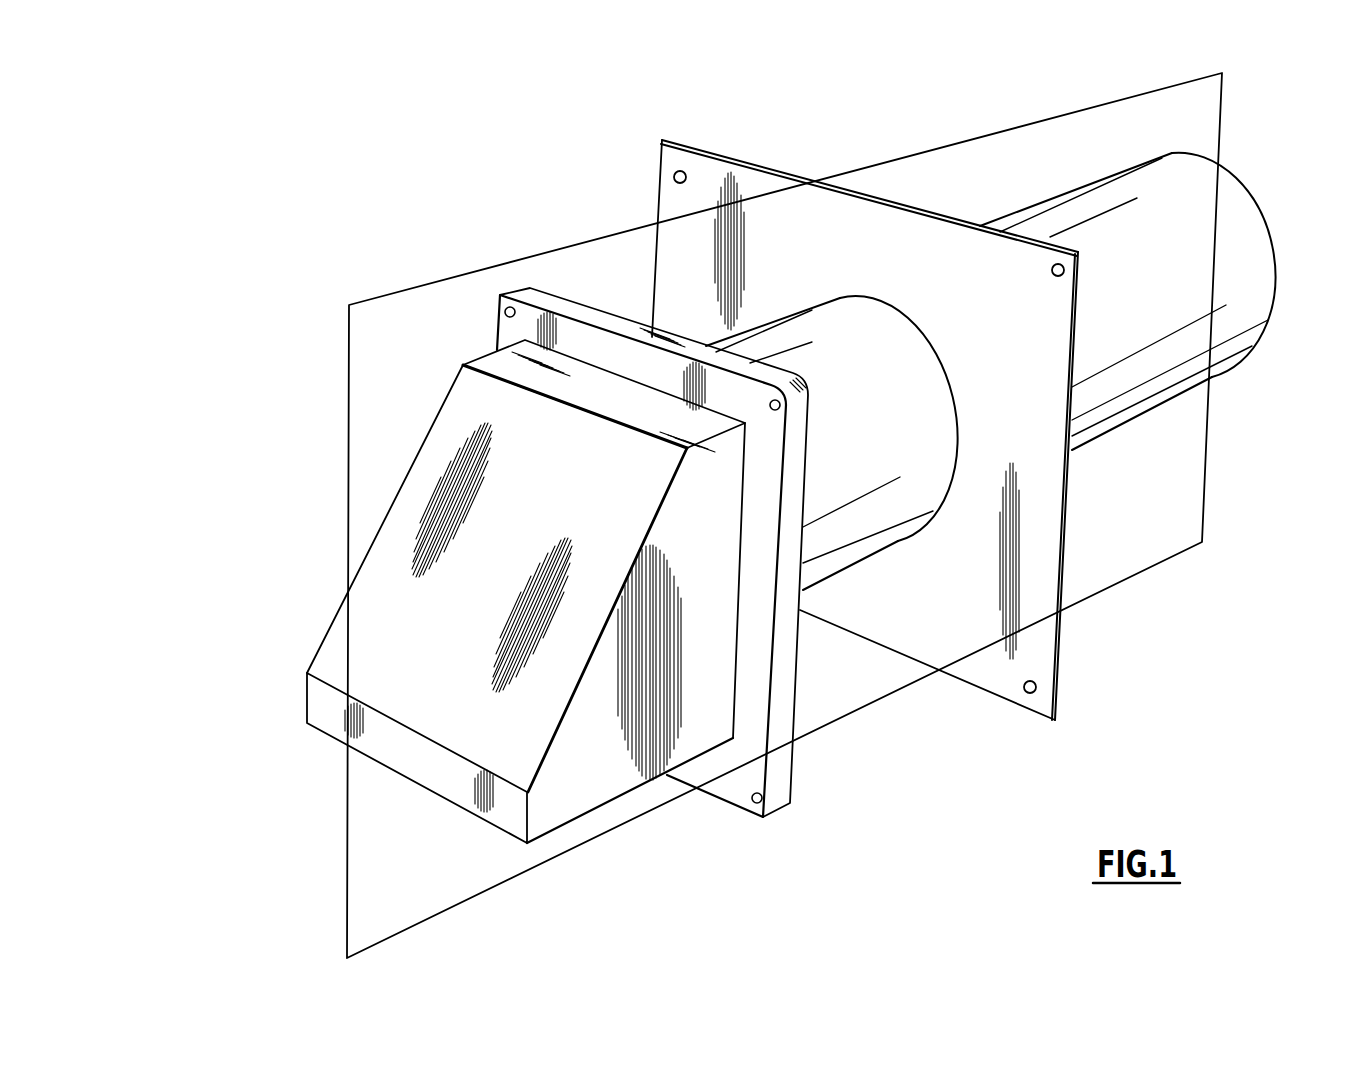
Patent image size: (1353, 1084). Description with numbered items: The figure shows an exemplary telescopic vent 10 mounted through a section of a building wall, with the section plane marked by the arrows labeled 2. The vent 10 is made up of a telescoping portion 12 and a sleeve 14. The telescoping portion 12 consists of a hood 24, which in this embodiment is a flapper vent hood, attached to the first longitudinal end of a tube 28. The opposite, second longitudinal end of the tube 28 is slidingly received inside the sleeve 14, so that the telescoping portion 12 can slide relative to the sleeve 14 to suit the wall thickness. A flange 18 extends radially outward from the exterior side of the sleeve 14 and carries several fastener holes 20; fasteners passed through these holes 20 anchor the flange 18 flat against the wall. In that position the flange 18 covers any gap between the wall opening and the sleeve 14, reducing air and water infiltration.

The telescopic vent 10 is at (255, 158).
The telescoping portion 12 is at (583, 170).
The sleeve 14 is at (1067, 190).
The flange 18 is at (992, 697).
The fastener holes 20 is at (1037, 687).
The hood 24 is at (325, 635).
The tube 28 is at (750, 330).
The section line 2- 2 is at (349, 305).